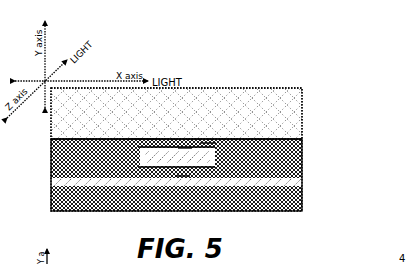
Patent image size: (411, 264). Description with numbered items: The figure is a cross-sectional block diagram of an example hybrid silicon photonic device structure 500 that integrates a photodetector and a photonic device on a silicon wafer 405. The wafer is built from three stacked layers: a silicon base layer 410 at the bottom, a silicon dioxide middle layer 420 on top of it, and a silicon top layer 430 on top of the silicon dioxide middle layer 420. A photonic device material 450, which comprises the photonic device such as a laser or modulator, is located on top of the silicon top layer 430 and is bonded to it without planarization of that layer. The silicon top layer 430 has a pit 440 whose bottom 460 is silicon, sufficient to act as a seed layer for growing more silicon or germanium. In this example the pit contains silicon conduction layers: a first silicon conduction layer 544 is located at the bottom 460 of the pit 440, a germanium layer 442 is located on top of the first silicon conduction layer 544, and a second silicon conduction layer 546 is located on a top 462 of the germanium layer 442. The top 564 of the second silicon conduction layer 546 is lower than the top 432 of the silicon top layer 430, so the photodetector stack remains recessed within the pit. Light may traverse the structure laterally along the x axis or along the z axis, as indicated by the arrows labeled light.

The hybrid silicon photonic device structure 500 is at (215, 75).
The photonic device material 450 is at (303, 116).
The top of silicon top layer 432 is at (287, 140).
The silicon top layer 430 is at (303, 158).
The silicon dioxide middle layer 420 is at (301, 182).
The silicon base layer 410 is at (195, 198).
The silicon wafer 405 is at (225, 175).
The pit 440 is at (141, 137).
The germanium layer 442 is at (136, 156).
The second silicon conduction layer 546 is at (136, 146).
The first silicon conduction layer 544 is at (136, 170).
The bottom of pit 460 is at (183, 174).
The top of germanium layer 462 is at (185, 151).
The top of second silicon conduction layer 564 is at (209, 145).